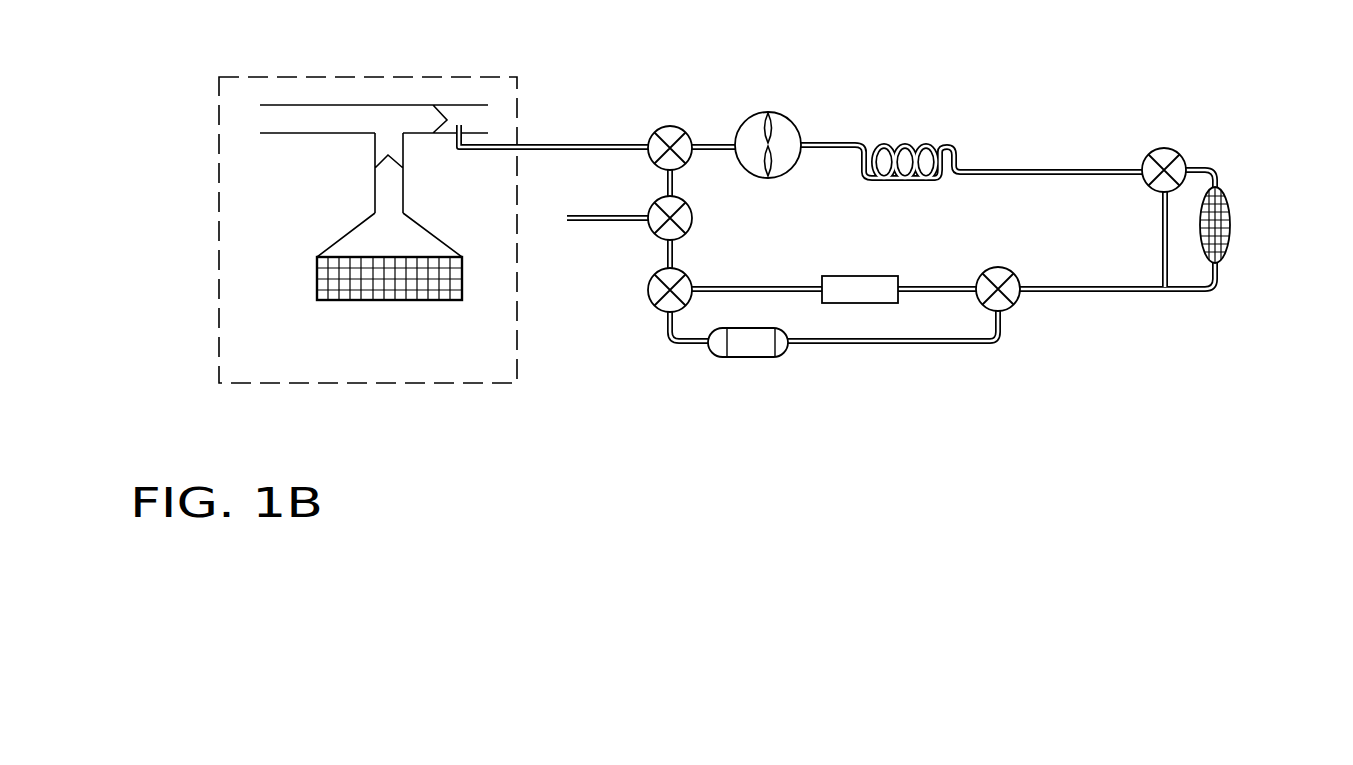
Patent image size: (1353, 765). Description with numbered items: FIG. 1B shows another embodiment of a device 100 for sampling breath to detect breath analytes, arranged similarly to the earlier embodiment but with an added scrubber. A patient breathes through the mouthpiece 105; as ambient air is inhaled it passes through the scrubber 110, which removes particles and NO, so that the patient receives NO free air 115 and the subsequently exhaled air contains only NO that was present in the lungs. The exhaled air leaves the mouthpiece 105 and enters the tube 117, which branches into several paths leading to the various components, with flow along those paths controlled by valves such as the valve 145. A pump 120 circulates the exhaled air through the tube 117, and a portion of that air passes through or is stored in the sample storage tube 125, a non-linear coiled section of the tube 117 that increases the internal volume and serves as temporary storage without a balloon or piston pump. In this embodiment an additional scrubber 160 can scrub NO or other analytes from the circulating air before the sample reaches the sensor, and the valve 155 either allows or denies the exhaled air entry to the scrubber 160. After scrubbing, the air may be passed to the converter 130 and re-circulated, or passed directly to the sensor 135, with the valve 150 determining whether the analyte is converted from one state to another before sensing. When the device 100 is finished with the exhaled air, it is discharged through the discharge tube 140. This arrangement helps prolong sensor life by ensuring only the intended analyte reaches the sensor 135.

The device 100 is at (317, 450).
The mouthpiece 105 is at (368, 214).
The scrubber 110 is at (397, 300).
The NO free air 115 is at (387, 237).
The tube 117 is at (590, 135).
The pump 120 is at (795, 115).
The sample storage tube 125 is at (908, 142).
The converter 130 is at (872, 275).
The sensor 135 is at (720, 357).
The discharge tube 140 is at (570, 221).
The valve 145 is at (665, 122).
The valve 150 is at (1015, 318).
The valve 155 is at (1180, 148).
The scrubber 160 is at (1222, 253).